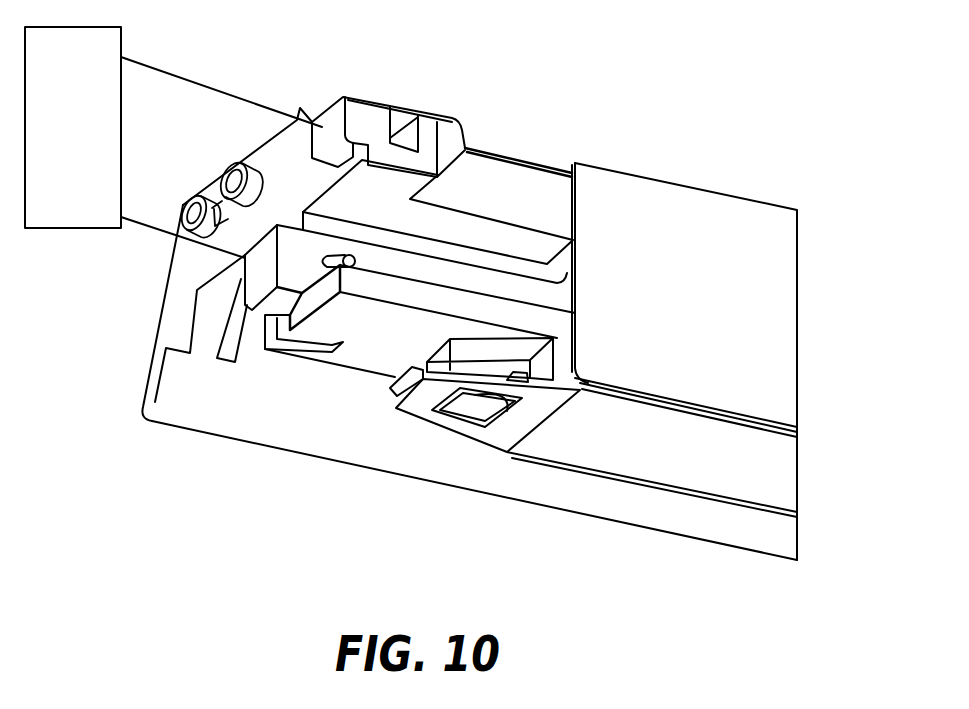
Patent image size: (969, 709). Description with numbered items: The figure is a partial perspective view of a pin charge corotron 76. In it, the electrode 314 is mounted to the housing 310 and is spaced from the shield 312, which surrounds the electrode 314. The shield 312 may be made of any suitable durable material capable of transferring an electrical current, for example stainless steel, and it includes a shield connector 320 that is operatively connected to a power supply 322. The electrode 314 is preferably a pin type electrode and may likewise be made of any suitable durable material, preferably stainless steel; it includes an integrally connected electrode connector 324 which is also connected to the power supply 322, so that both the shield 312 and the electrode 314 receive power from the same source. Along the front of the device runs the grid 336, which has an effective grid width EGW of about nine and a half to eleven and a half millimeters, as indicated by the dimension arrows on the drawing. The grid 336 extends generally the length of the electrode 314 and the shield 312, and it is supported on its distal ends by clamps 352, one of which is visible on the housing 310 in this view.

The pin charge corotron 76 is at (677, 66).
The housing 310 is at (433, 470).
The shield 312 is at (760, 228).
The electrode 314 is at (485, 283).
The shield connector 320 is at (331, 110).
The power supply 322 is at (83, 229).
The electrode connector 324 is at (248, 283).
The grid 336 is at (700, 462).
The clamps 352 is at (387, 400).
The effective grid width EGW is at (690, 421).